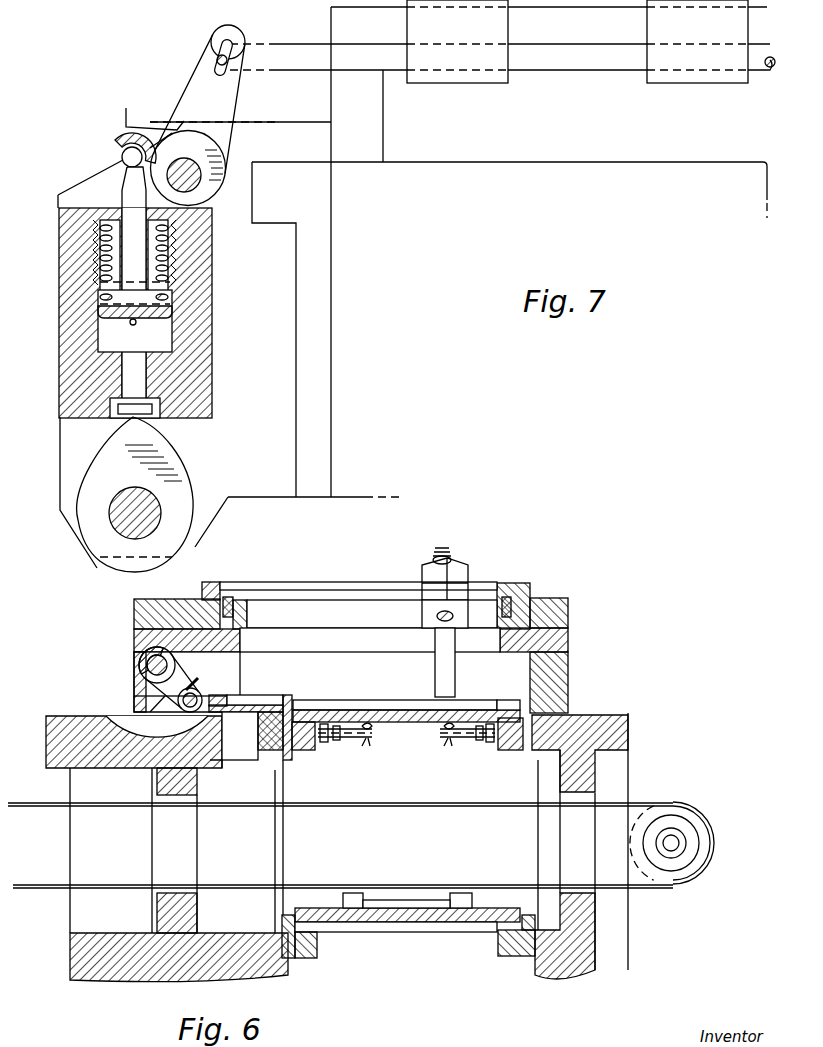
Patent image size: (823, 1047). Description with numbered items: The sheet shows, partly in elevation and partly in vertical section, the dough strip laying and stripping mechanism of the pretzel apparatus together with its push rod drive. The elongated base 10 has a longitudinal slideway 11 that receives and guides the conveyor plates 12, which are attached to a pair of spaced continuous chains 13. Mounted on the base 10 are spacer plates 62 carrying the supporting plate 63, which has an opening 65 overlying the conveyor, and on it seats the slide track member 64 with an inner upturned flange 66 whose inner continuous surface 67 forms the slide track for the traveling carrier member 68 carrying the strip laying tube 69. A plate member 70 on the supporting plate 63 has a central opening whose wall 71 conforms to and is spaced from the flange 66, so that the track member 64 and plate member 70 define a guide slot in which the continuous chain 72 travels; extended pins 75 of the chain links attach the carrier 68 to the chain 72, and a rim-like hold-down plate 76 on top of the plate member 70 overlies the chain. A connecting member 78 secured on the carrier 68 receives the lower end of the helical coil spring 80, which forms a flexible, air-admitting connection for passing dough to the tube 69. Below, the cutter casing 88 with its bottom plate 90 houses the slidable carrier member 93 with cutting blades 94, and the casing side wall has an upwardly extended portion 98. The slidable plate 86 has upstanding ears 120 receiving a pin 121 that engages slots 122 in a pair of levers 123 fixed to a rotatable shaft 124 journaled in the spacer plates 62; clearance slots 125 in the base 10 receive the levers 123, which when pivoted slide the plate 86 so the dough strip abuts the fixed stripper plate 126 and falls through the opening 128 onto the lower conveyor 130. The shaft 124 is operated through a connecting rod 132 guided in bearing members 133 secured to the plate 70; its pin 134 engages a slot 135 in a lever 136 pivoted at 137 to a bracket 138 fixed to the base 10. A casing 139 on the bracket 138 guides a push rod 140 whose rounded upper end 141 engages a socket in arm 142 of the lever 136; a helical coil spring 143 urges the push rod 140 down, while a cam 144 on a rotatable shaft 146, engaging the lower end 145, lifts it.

In FIG. 7, the base 10 is at (296, 297).
In FIG. 6, the base 10 is at (630, 735).
In FIG. 6, the longitudinal slideway 11 is at (305, 752).
In FIG. 6, the plates 12 is at (385, 710).
In FIG. 6, the continuous chains 13 is at (330, 744).
In FIG. 6, the spacer plates 62 is at (568, 690).
In FIG. 6, the supporting plate 63 is at (568, 640).
In FIG. 6, the slide track member 64 is at (232, 645).
In FIG. 6, the opening 65 is at (318, 648).
In FIG. 6, the upturned flange 66 is at (250, 600).
In FIG. 6, the inner continuous surface 67 is at (247, 614).
In FIG. 6, the carrier member 68 is at (442, 570).
In FIG. 6, the strip laying tube 69 is at (455, 680).
In FIG. 7, the plate member 70 is at (331, 10).
In FIG. 6, the plate member 70 is at (134, 613).
In FIG. 6, the wall 71 is at (540, 598).
In FIG. 6, the continuous chain 72 is at (226, 597).
In FIG. 6, the extended pins 75 is at (230, 597).
In FIG. 6, the hold-down plate 76 is at (202, 588).
In FIG. 6, the connecting member 78 is at (462, 558).
In FIG. 6, the helical coil spring 80 is at (442, 548).
In FIG. 6, the slidable plate 86 is at (240, 720).
In FIG. 6, the casing 88 is at (262, 752).
In FIG. 6, the bottom plate 90 is at (286, 765).
In FIG. 6, the carrier member 93 is at (255, 701).
In FIG. 6, the cutting blades 94 is at (295, 704).
In FIG. 6, the extended portion 98 is at (290, 695).
In FIG. 6, the upstanding ears 120 is at (175, 705).
In FIG. 6, the pin 121 is at (200, 697).
In FIG. 6, the slots 122 is at (194, 688).
In FIG. 6, the levers 123 is at (149, 702).
In FIG. 6, the rotatable shaft 124 is at (145, 662).
In FIG. 6, the clearance slots 125 is at (128, 758).
In FIG. 6, the stripper plate 126 is at (228, 698).
In FIG. 6, the opening 128 is at (222, 765).
In FIG. 6, the conveyor 130 is at (658, 886).
In FIG. 7, the connecting rod 132 is at (562, 70).
In FIG. 7, the bearing members 133 is at (445, 78).
In FIG. 7, the pin 134 is at (215, 55).
In FIG. 7, the slot 135 is at (218, 64).
In FIG. 7, the lever 136 is at (217, 118).
In FIG. 7, the pivot 137 is at (200, 178).
In FIG. 7, the bracket 138 is at (296, 395).
In FIG. 7, the casing 139 is at (160, 326).
In FIG. 7, the push rod 140 is at (125, 183).
In FIG. 7, the rounded upper end 141 is at (122, 155).
In FIG. 7, the arm 142 is at (126, 113).
In FIG. 7, the helical coil spring 143 is at (170, 256).
In FIG. 7, the cam 144 is at (151, 498).
In FIG. 7, the lower end 145 is at (122, 412).
In FIG. 7, the rotatable shaft 146 is at (123, 527).